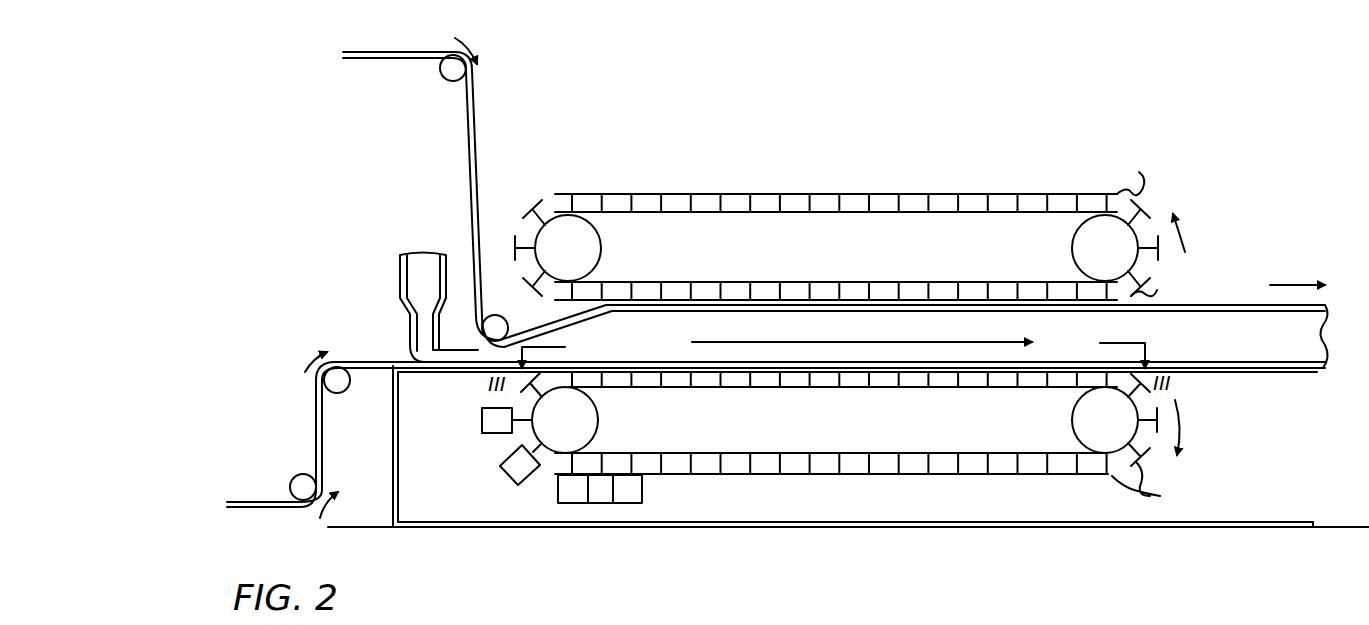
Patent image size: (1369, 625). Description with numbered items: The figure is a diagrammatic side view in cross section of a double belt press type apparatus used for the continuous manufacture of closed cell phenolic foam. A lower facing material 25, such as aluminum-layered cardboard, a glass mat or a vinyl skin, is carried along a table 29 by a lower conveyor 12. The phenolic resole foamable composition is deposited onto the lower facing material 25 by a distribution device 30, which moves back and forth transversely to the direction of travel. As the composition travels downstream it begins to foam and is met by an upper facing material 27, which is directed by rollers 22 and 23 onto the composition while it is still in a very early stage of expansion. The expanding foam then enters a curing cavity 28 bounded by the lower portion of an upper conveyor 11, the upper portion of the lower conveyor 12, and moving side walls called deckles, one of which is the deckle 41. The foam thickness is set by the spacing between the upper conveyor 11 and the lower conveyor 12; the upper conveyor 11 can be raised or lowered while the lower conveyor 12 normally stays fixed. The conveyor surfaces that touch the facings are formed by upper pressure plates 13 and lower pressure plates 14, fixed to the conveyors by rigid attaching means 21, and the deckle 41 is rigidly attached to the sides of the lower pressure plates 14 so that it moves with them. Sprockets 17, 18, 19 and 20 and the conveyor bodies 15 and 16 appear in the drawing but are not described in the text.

The upper conveyor 11 is at (1194, 217).
The lower conveyor 12 is at (1194, 426).
The upper pressure plates 13 is at (1148, 168).
The lower pressure plates 14 is at (1150, 496).
The upper conveyor 15 is at (645, 282).
The lower conveyor 16 is at (968, 452).
The upper conveyor front sprocket 17 is at (597, 248).
The upper conveyor rear sprocket 18 is at (1073, 250).
The lower conveyor front sprocket 19 is at (598, 422).
The lower conveyor rear sprocket 20 is at (1073, 420).
The rigid attaching means 21 is at (1148, 272).
The roller 22 is at (499, 319).
The roller 23 is at (449, 70).
The lower facing material 25 is at (258, 502).
The upper facing material 27 is at (391, 54).
The curing cavity 28 is at (800, 342).
The table 29 is at (393, 445).
The distribution device 30 is at (400, 274).
The deckle 41 is at (512, 468).